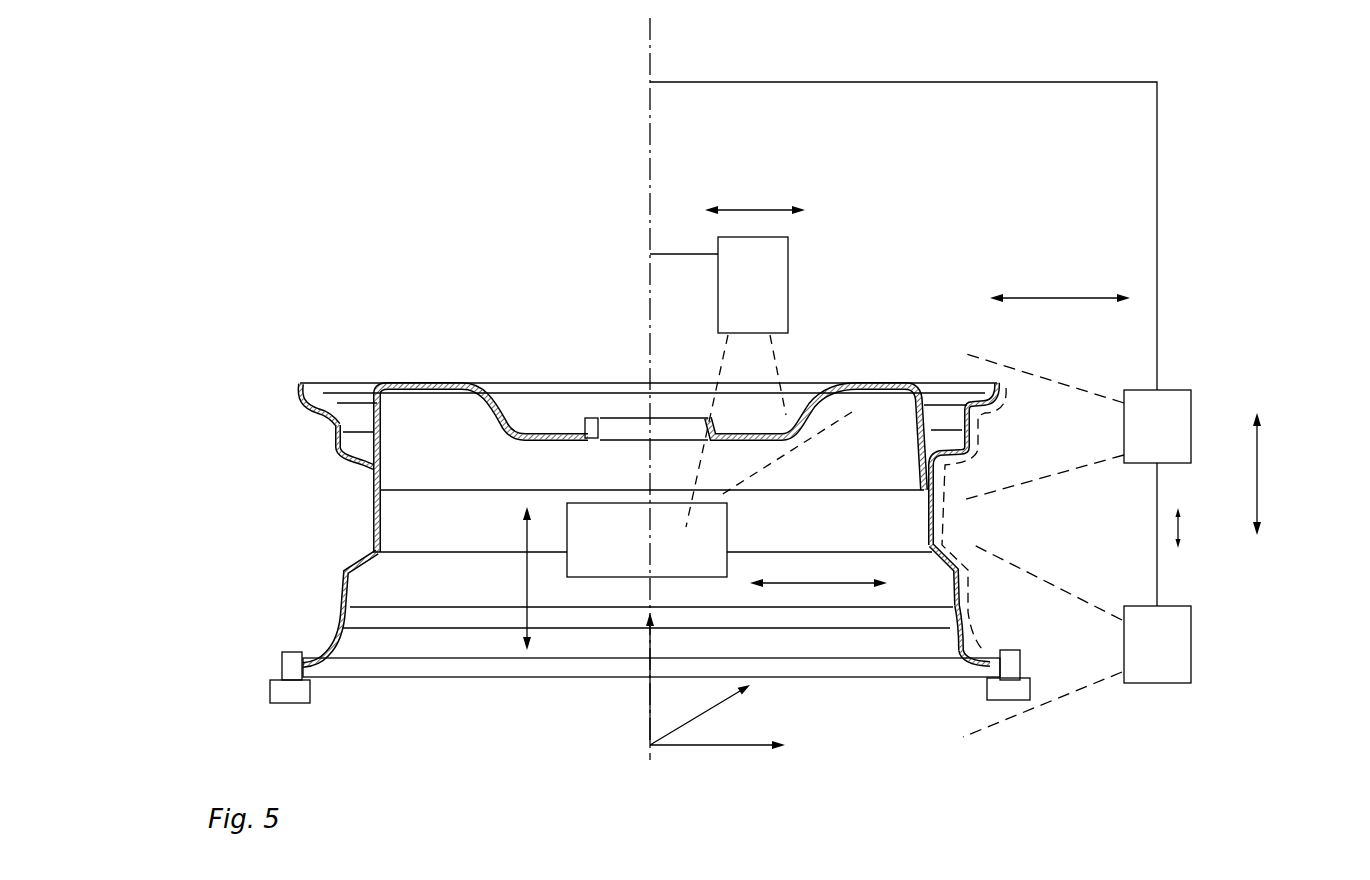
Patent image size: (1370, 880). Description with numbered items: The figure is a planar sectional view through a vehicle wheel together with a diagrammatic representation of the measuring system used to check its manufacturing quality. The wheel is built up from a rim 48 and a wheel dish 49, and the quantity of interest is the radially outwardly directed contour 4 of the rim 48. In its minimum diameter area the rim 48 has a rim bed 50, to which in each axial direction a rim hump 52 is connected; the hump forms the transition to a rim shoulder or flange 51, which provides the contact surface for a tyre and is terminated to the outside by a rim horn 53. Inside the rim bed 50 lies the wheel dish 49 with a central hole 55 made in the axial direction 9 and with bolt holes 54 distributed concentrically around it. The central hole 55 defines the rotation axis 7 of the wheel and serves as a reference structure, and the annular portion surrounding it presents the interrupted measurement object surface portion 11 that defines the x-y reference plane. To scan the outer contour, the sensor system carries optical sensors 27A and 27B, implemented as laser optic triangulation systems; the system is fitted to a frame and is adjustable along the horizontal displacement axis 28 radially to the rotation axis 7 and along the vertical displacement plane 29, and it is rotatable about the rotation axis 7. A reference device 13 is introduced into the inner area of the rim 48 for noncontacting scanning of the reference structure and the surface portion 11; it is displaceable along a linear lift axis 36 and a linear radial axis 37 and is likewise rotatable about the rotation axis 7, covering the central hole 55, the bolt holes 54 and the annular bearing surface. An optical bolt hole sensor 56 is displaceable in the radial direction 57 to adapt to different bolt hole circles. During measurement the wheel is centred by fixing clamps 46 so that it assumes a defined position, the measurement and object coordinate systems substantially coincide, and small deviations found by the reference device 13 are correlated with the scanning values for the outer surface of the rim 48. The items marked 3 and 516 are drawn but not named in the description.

The base plate 3 is at (433, 692).
The contour 4 is at (992, 414).
The rotation axis 7 is at (650, 248).
The axial direction 9 is at (606, 428).
The measurement object surface portion 11 is at (364, 477).
The reference device 13 is at (598, 568).
The optical sensor 27A is at (1153, 676).
The optical sensor 27B is at (1173, 400).
The horizontal displacement axis 28 is at (1052, 298).
The vertical displacement plane 29 is at (1258, 470).
The linear lift axis 36 is at (528, 574).
The linear radial axis 37 is at (825, 583).
The fixing clamps 46 is at (268, 690).
The rim 48 is at (333, 382).
The wheel dish 49 is at (425, 383).
The rim bed 50 is at (363, 520).
The rim shoulder or flange 51 is at (330, 422).
The rim hump 52 is at (337, 452).
The rim horn 53 is at (298, 389).
The bolt holes 54 is at (752, 425).
The central hole 55 is at (680, 427).
The optical bolt hole sensor 56 is at (772, 283).
The radial direction 57 is at (750, 210).
The coordinate system origin 516 is at (648, 698).